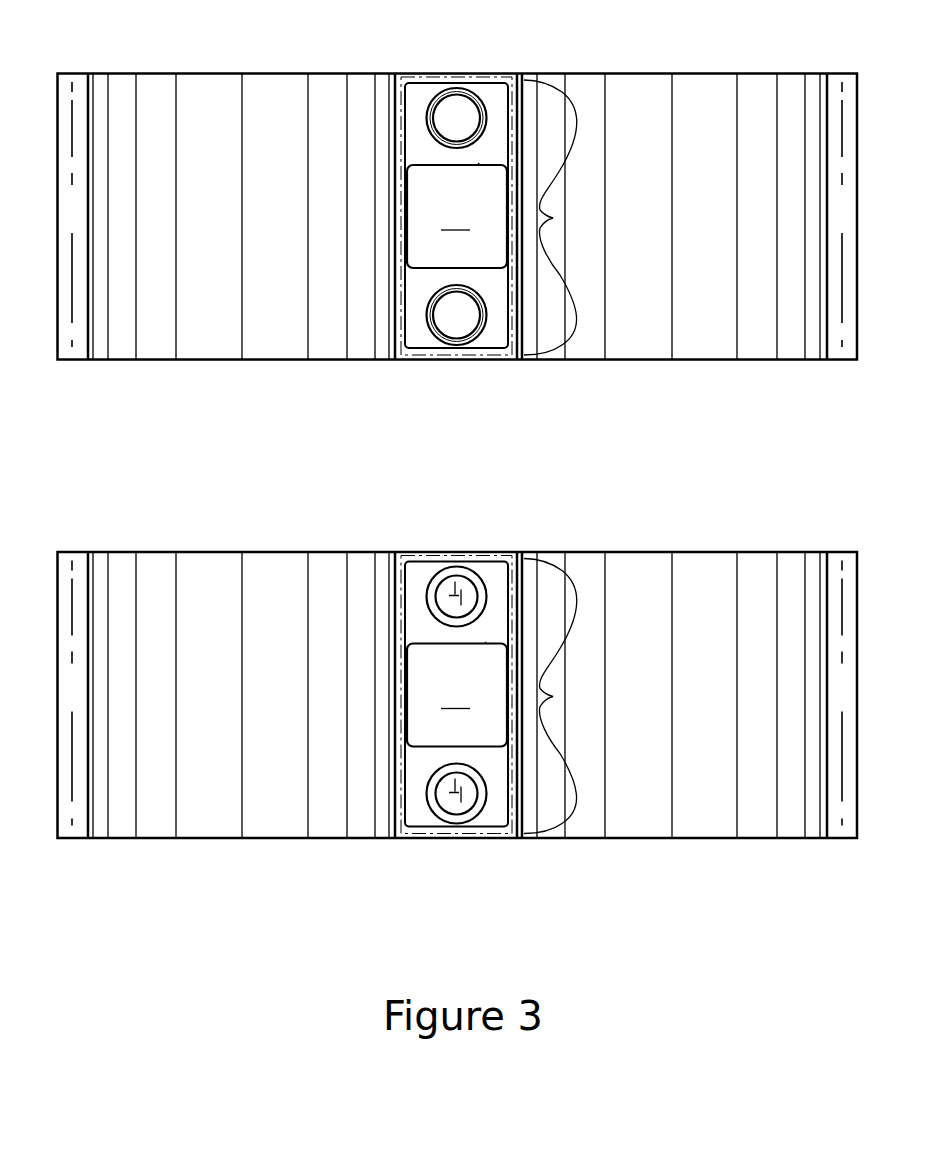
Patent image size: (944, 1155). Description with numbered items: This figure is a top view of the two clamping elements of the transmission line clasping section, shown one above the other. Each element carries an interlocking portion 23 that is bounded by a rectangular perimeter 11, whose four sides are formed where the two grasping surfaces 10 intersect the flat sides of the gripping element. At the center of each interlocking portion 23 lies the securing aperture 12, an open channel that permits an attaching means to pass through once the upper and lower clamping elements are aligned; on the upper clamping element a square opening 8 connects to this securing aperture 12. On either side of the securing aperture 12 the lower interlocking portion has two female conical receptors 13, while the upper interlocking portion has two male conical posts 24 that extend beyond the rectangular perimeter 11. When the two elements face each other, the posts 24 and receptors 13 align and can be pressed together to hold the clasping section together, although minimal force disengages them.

The square opening 8 is at (478, 163).
The grasping surfaces 10 is at (213, 317).
The rectangular perimeter 11 is at (445, 353).
The securing aperture 12 is at (457, 456).
The female conical receptors 13 is at (452, 124).
The interlocking portions 23 is at (553, 218).
The male conical posts 24 is at (455, 597).